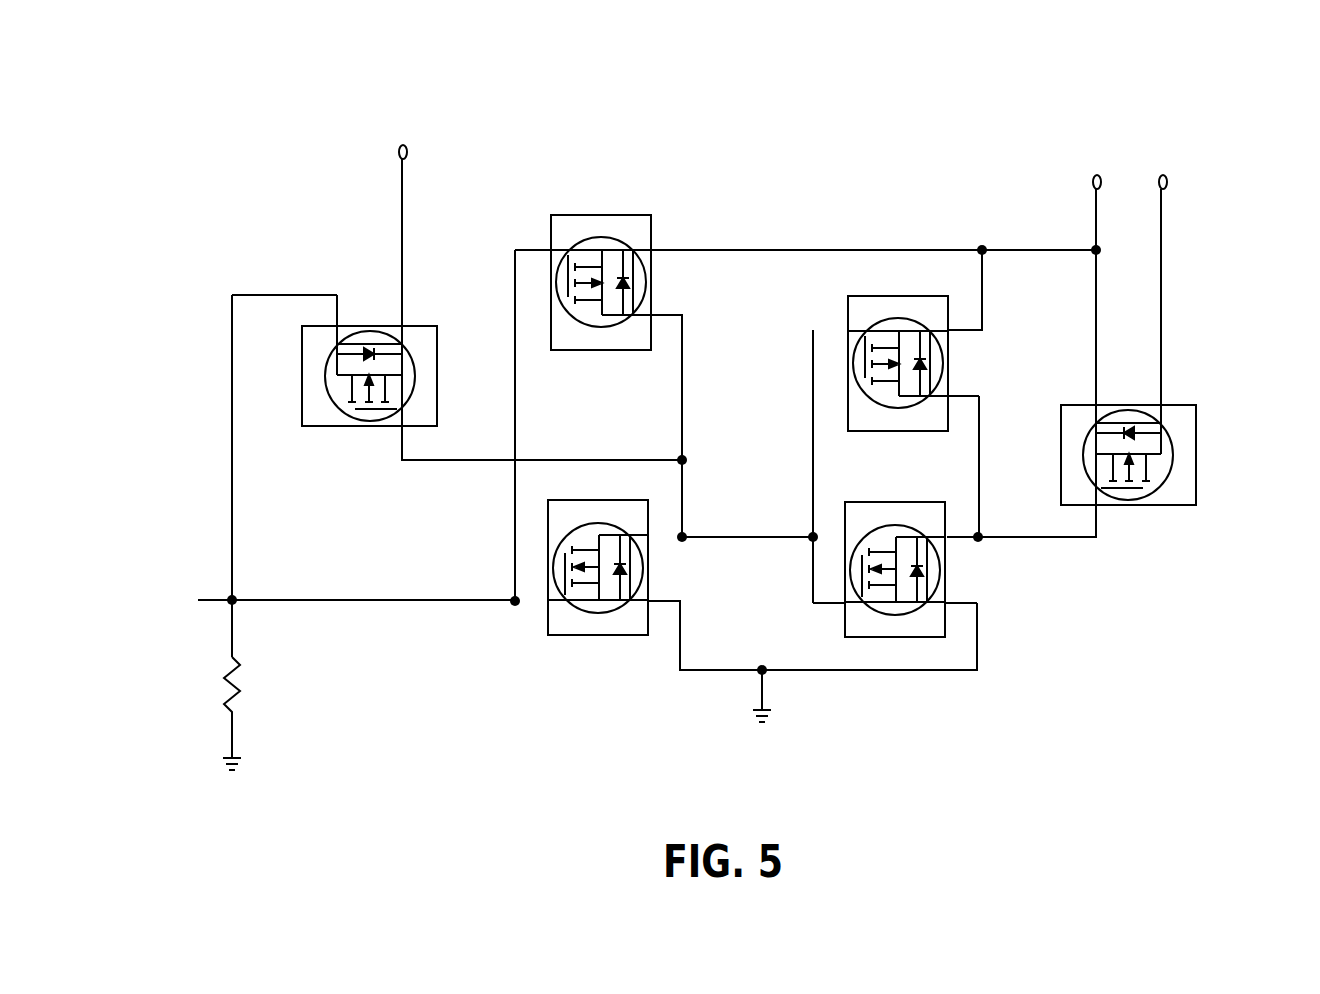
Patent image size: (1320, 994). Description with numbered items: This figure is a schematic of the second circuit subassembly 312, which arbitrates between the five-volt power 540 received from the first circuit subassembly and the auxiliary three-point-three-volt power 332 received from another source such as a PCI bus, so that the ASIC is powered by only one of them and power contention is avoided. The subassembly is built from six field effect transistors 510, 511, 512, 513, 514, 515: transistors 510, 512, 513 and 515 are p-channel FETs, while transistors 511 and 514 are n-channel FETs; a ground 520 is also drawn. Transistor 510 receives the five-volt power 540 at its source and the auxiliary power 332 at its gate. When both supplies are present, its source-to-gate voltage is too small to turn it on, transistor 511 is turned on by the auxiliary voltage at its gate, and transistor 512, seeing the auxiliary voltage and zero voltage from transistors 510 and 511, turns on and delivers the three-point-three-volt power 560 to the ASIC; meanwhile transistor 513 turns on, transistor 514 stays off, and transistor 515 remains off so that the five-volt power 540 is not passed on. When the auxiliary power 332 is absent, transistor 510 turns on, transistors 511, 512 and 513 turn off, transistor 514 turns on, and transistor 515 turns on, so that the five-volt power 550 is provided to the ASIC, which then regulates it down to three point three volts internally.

The second circuit subassembly 312 is at (716, 59).
The +3.3V auxiliary power 332 is at (145, 639).
The transistor 510 is at (610, 204).
The transistor 511 is at (639, 650).
The transistor 512 is at (325, 436).
The transistor 513 is at (841, 304).
The transistor 514 is at (960, 571).
The transistor 515 is at (1202, 513).
The ground 520 is at (781, 724).
The +5V power 540 is at (1080, 162).
The +5V power 550 is at (1196, 169).
The +3.3V power 560 is at (385, 137).